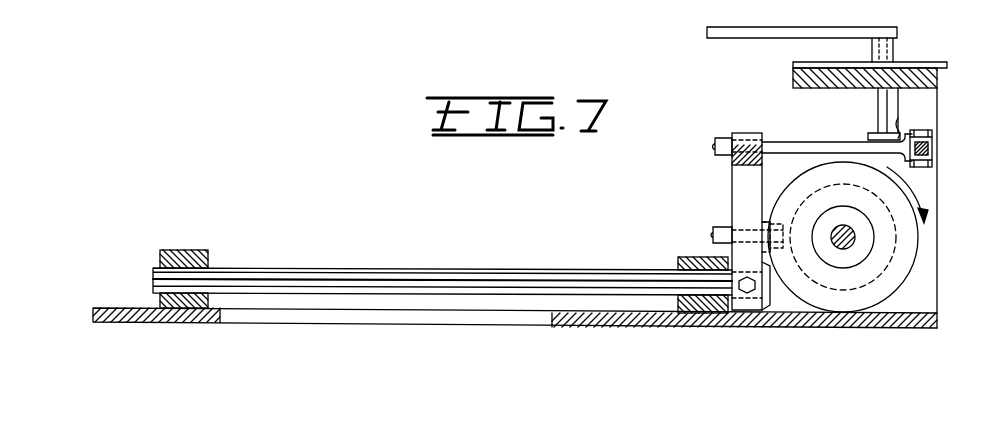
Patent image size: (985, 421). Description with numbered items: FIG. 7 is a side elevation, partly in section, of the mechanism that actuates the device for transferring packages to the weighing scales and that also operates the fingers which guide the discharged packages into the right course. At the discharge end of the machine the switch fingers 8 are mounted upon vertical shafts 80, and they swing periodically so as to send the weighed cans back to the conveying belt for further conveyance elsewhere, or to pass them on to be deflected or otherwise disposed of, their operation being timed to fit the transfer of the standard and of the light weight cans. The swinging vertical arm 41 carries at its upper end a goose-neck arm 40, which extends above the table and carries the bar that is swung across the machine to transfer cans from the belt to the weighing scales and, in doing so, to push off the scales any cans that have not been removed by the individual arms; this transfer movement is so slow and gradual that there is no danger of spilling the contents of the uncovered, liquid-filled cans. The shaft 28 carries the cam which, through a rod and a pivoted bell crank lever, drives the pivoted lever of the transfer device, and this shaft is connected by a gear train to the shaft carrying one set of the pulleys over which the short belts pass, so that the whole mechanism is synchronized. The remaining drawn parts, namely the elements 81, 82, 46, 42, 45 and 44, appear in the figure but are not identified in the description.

The switch fingers 8 is at (779, 20).
The vertical shafts 80 is at (878, 104).
The pin 81 is at (899, 128).
The clevis 82 is at (933, 152).
The link rod 46 is at (822, 142).
The goose-neck arm 40 is at (733, 158).
The swinging vertical arm 41 is at (732, 198).
The shaft 42 is at (527, 271).
The pulley 45 is at (793, 191).
The shaft 28 is at (855, 239).
The wheel 44 is at (905, 261).